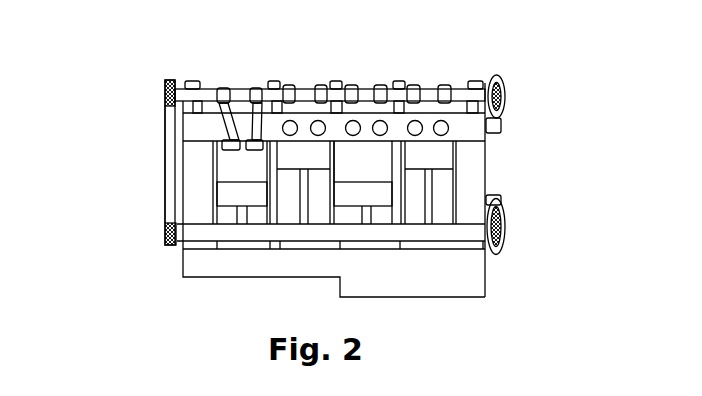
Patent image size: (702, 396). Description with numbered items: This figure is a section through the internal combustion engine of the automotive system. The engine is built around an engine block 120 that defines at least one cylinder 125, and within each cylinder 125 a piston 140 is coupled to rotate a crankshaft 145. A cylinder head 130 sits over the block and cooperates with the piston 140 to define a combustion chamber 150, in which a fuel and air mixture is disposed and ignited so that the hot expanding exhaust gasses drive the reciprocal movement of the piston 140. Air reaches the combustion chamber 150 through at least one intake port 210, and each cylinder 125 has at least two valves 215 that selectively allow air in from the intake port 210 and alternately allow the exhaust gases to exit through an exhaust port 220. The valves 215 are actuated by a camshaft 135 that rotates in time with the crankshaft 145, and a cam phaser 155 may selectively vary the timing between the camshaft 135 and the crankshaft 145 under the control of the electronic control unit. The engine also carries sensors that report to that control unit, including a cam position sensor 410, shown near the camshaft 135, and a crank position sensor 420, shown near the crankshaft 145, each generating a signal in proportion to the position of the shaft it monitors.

The engine block 120 is at (167, 183).
The cylinder 125 is at (345, 165).
The cylinder head 130 is at (164, 140).
The camshaft 135 is at (226, 90).
The piston 140 is at (370, 193).
The crankshaft 145 is at (183, 257).
The combustion chamber 150 is at (486, 158).
The cam phaser 155 is at (164, 92).
The intake port 210 is at (367, 87).
The valves 215 is at (220, 140).
The exhaust port 220 is at (298, 87).
The cam position sensor 410 is at (504, 131).
The crank position sensor 420 is at (496, 205).